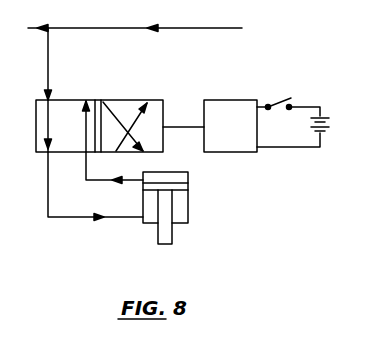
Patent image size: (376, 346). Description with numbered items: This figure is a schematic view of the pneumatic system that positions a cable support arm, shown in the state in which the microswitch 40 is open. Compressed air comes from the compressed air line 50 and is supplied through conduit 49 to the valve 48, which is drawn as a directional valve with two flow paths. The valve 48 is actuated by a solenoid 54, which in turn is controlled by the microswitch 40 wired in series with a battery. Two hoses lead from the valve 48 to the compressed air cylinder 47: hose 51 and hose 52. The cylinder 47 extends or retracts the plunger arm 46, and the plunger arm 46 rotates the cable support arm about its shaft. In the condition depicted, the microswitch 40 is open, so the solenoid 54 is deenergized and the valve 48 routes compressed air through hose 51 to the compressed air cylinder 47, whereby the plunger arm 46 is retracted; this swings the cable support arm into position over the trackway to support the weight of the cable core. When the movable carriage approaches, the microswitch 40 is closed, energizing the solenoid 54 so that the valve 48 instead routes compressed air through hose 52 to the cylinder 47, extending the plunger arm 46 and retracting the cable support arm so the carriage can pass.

The compressed air line 50 is at (199, 14).
The conduit 49 is at (48, 74).
The valve 48 is at (97, 100).
The solenoid 54 is at (222, 100).
The microswitch 40 is at (293, 110).
The hose 52 is at (126, 185).
The hose 51 is at (62, 218).
The compressed air cylinder 47 is at (188, 210).
The plunger arm 46 is at (172, 238).